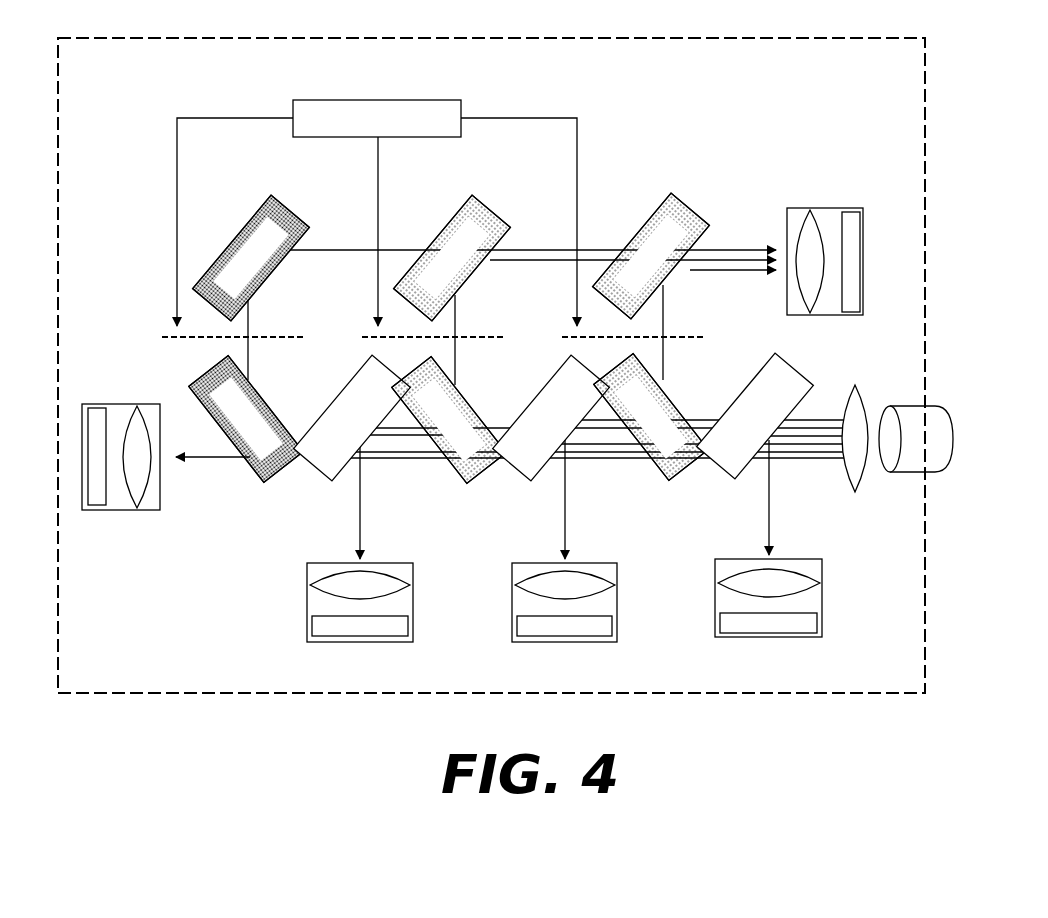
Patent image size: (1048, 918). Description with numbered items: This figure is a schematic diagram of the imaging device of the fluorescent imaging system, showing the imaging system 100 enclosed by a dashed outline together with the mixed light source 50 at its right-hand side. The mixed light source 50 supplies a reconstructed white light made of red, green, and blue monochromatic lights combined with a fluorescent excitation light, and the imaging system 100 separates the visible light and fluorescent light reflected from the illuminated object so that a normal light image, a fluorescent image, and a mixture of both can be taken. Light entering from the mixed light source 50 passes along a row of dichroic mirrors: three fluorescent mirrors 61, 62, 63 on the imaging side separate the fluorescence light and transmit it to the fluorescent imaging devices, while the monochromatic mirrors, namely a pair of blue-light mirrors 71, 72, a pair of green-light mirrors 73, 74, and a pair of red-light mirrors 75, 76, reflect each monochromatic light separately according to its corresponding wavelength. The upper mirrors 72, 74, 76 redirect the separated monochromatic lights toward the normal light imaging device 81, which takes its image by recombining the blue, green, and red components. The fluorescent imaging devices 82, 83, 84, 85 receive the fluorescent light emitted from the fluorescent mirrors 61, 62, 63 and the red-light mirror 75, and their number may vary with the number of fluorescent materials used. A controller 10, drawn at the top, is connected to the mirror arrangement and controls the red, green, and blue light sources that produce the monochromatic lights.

The controller 10 is at (377, 99).
The mixed light source 50 is at (956, 436).
The fluorescent mirror 61 is at (720, 476).
The fluorescent mirror 62 is at (521, 476).
The fluorescent mirror 63 is at (320, 476).
The blue-light mirror 71 is at (655, 476).
The blue-light mirror 72 is at (690, 205).
The green-light mirror 73 is at (460, 476).
The green-light mirror 74 is at (491, 207).
The red-light mirror 75 is at (255, 476).
The red-light mirror 76 is at (292, 209).
The normal light imaging device 81 is at (830, 206).
The fluorescent imaging device 82 is at (805, 639).
The fluorescent imaging device 83 is at (603, 643).
The fluorescent imaging device 84 is at (397, 643).
The fluorescent imaging device 85 is at (122, 403).
The imaging system 100 is at (930, 223).